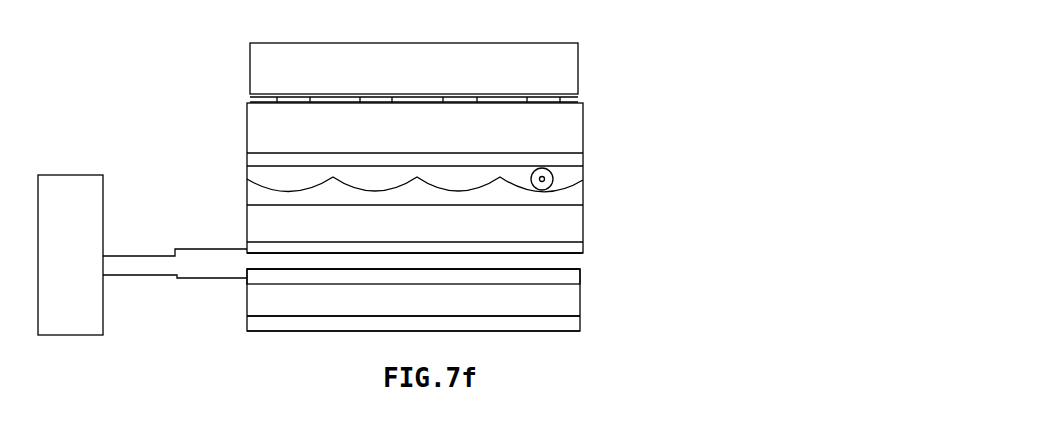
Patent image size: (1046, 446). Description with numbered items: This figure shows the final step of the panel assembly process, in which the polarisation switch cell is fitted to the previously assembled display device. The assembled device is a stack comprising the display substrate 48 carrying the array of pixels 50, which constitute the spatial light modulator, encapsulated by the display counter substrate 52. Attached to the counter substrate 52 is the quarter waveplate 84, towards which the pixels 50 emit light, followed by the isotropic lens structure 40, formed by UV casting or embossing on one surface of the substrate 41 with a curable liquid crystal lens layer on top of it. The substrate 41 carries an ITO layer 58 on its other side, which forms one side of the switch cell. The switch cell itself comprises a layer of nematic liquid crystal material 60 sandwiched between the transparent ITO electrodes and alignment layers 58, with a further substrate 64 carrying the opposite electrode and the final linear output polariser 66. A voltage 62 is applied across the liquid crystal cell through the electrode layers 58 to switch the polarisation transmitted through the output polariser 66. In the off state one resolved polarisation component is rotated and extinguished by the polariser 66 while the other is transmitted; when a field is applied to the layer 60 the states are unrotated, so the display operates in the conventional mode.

The display substrate 48 is at (580, 65).
The array of pixels 50 is at (583, 98).
The cover substrate 52 is at (583, 127).
The quarter waveplate 84 is at (583, 158).
The isotropic lens structure 40 is at (585, 189).
The substrate 41 is at (585, 228).
The ITO electrodes and alignment layer 58 is at (587, 246).
The nematic liquid crystal layer 60 is at (578, 261).
The substrate 64 is at (580, 300).
The voltage 62 is at (142, 255).
The output polariser 66 is at (247, 324).